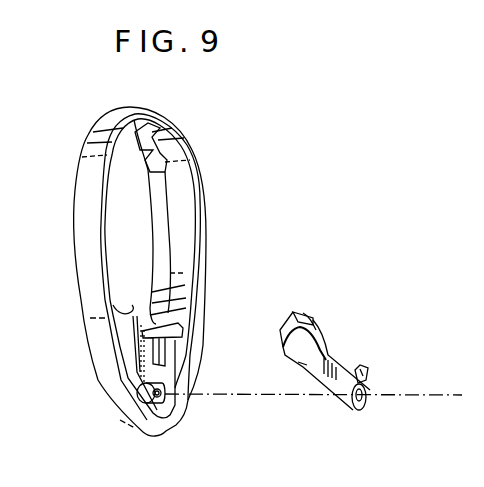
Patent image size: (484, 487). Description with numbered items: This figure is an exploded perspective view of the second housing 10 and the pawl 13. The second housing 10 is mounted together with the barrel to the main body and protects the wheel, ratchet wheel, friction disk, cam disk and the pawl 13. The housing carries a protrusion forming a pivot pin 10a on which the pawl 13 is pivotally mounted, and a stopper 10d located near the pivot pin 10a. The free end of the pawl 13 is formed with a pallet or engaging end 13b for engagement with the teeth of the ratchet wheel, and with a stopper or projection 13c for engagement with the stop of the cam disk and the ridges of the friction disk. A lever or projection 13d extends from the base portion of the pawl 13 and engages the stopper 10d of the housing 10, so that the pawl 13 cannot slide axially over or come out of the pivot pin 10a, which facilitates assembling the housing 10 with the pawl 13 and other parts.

The second housing 10 is at (188, 193).
The pivot pin 10a is at (160, 395).
The stopper 10d is at (162, 350).
The pawl 13 is at (333, 393).
The engaging end 13b is at (320, 328).
The projection 13c is at (297, 314).
The lever 13d is at (363, 367).